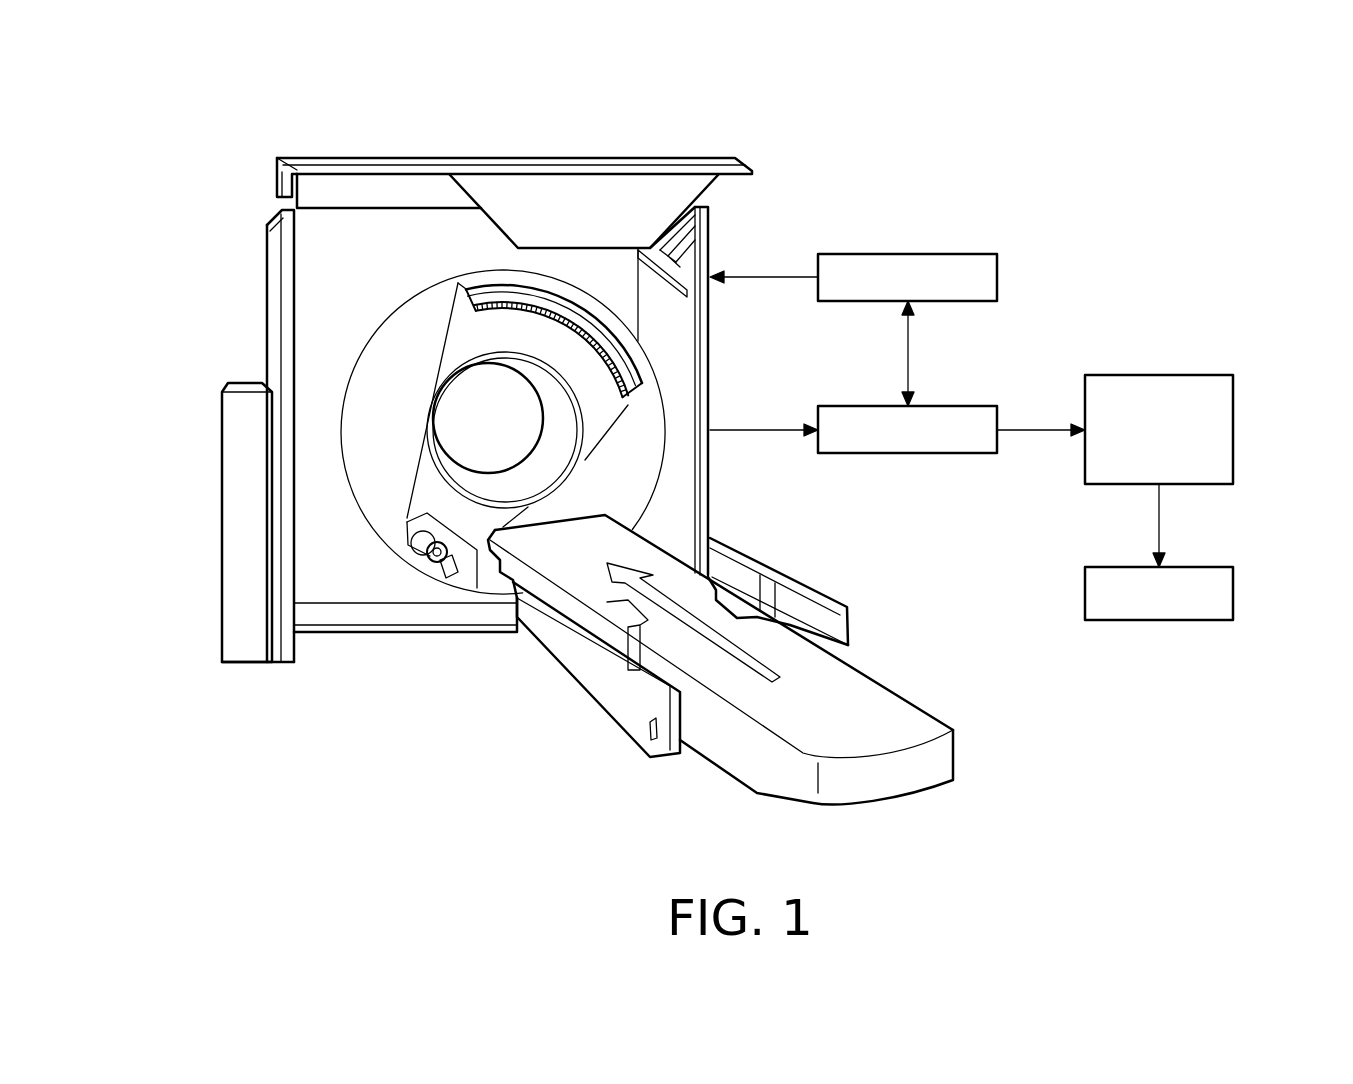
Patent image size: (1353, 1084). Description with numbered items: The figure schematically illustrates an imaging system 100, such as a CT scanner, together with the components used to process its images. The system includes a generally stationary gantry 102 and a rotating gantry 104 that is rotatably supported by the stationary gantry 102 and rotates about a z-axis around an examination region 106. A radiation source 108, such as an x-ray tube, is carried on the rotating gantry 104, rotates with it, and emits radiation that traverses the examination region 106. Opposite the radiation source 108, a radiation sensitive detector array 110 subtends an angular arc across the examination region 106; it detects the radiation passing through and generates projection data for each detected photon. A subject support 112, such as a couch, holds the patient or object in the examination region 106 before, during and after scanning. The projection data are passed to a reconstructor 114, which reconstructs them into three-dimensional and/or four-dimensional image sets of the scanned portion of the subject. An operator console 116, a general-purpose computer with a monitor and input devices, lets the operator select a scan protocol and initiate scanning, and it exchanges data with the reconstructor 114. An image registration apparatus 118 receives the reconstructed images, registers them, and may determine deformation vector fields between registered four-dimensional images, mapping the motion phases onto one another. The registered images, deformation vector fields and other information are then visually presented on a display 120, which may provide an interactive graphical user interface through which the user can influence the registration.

The imaging system 100 is at (160, 167).
The stationary gantry 102 is at (271, 280).
The rotating gantry 104 is at (468, 327).
The examination region 106 is at (512, 432).
The radiation source 108 is at (437, 564).
The detector array 110 is at (643, 372).
The subject support 112 is at (890, 730).
The reconstructor 114 is at (908, 453).
The operator console 116 is at (997, 277).
The image registration apparatus 118 is at (1233, 430).
The display 120 is at (1233, 592).